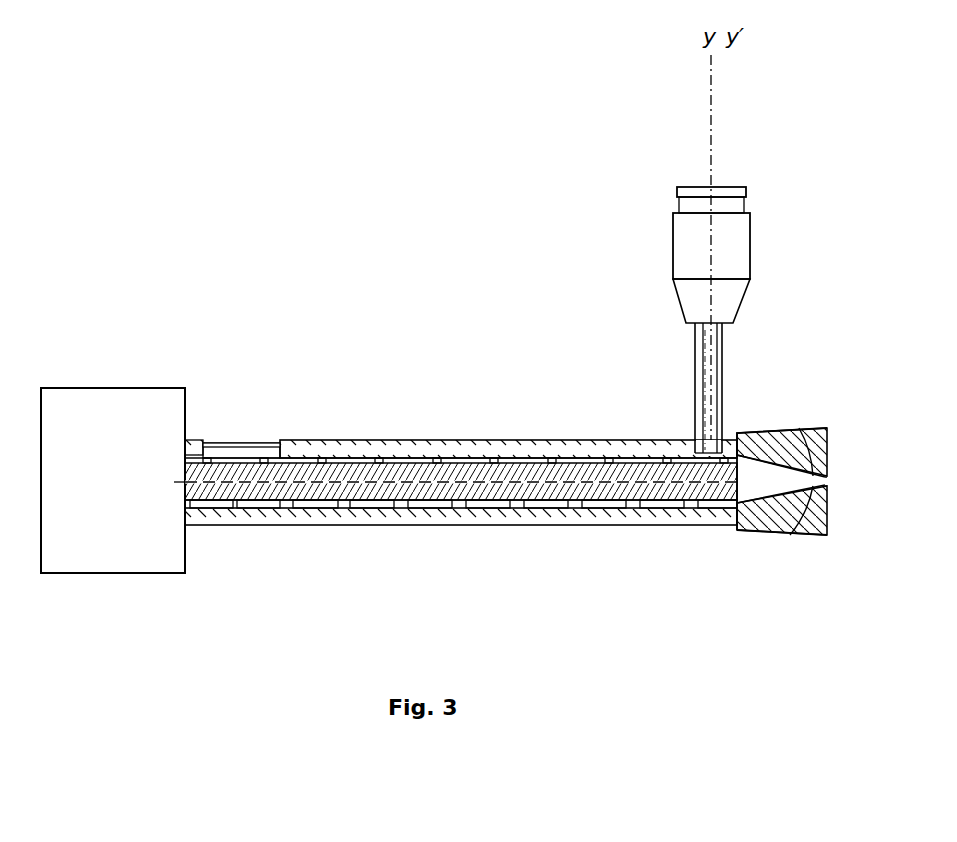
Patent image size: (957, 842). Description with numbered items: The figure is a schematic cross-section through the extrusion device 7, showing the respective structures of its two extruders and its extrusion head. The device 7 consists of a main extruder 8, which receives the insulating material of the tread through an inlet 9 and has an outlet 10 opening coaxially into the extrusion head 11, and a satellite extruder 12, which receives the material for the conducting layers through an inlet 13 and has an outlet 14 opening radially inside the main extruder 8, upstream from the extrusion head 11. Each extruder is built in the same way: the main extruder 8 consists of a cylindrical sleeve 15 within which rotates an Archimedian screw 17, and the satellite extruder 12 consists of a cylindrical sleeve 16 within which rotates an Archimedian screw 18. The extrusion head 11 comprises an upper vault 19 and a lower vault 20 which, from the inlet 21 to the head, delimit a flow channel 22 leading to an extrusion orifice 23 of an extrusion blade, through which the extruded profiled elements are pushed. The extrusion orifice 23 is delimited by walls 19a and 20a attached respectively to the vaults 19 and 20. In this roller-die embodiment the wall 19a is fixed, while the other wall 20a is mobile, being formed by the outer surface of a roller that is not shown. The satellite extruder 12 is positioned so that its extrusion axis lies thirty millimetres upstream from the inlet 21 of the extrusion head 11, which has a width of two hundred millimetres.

The device 7 is at (378, 372).
The main extruder 8 is at (281, 531).
The inlet 9 is at (240, 440).
The outlet 10 is at (734, 502).
The extrusion head 11 is at (790, 536).
The satellite extruder 12 is at (759, 249).
The inlet 13 is at (723, 341).
The outlet 14 is at (727, 437).
The cylindrical sleeve 15 is at (400, 514).
The cylindrical sleeve 16 is at (722, 370).
The Archimedian screw 17 is at (512, 500).
The Archimedian screw 18 is at (700, 400).
The upper vault 19 is at (785, 447).
The wall 19a is at (802, 468).
The lower vault 20 is at (765, 522).
The wall 20a is at (808, 531).
The inlet 21 is at (738, 481).
The flow channel 22 is at (800, 470).
The extrusion orifice 23 is at (828, 482).